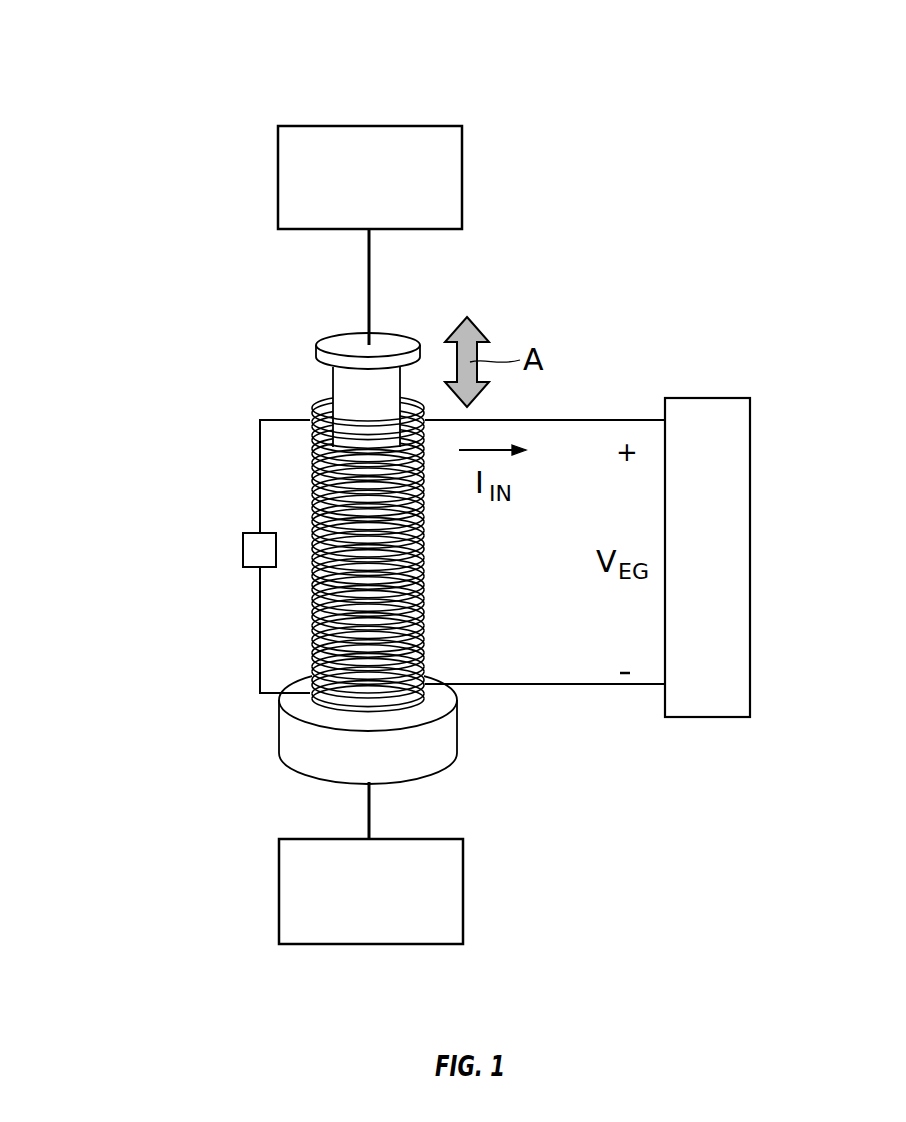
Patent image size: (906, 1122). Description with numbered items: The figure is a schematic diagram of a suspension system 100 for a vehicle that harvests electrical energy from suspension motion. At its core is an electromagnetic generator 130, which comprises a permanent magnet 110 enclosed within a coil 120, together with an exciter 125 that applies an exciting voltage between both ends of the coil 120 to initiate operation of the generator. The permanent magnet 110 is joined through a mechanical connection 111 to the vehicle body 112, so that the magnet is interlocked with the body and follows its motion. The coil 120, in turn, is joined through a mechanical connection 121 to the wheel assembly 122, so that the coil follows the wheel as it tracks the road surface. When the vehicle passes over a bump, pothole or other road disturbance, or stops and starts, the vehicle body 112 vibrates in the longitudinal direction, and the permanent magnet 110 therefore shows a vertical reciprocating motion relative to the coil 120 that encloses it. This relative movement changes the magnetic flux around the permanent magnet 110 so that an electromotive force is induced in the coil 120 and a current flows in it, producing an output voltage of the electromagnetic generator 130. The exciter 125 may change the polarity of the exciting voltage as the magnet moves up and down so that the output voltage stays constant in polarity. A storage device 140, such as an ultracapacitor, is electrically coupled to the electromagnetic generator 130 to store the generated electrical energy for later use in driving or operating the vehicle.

The suspension system 100 is at (497, 50).
The permanent magnet 110 is at (348, 386).
The mechanical connection 111 is at (405, 341).
The vehicle body 112 is at (278, 165).
The coil 120 is at (297, 536).
The mechanical connection 121 is at (425, 765).
The wheel assembly 122 is at (278, 868).
The exciter 125 is at (243, 551).
The electromagnetic generator 130 is at (158, 503).
The storage device 140 is at (709, 716).